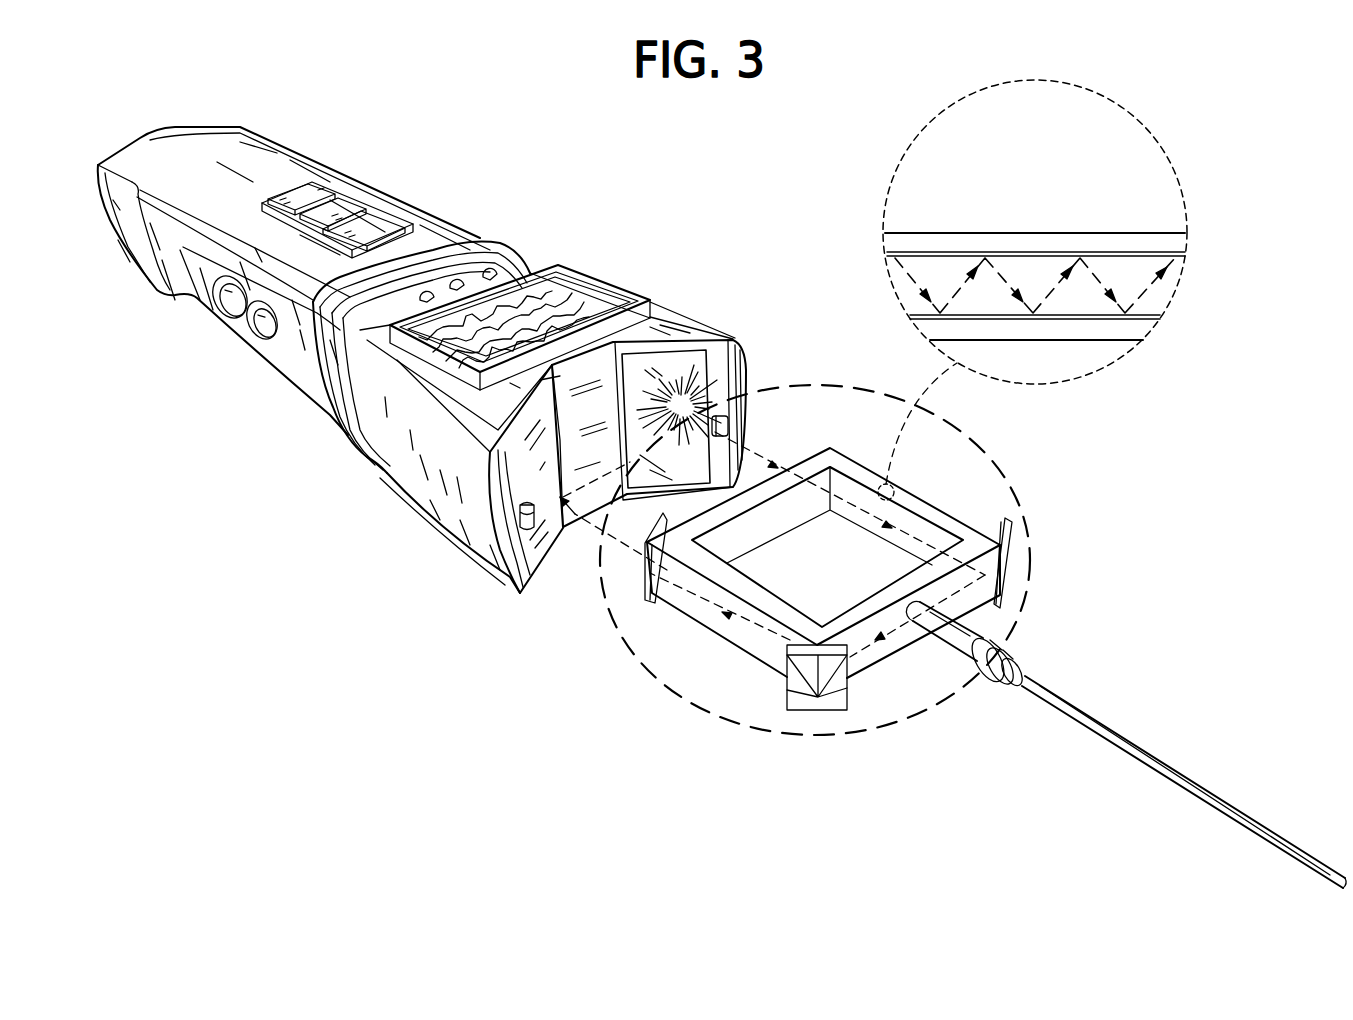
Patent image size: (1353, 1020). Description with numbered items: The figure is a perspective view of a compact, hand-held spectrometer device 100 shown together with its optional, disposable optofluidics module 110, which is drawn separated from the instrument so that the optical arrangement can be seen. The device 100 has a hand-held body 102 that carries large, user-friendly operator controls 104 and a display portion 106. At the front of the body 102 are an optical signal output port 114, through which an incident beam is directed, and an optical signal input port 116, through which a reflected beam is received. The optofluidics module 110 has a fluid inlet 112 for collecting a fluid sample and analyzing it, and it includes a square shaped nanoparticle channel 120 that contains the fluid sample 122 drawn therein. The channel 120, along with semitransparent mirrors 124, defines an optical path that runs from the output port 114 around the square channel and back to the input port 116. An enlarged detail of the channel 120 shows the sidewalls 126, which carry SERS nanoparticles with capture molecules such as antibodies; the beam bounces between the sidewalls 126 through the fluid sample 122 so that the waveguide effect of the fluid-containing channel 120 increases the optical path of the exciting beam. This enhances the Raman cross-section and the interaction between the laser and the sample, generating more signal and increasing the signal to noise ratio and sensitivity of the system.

The hand-held spectrometer device 100 is at (283, 110).
The hand-held body 102 is at (173, 172).
The operator controls 104 is at (378, 222).
The display portion 106 is at (602, 278).
The optofluidics module 110 is at (990, 498).
The fluid inlet 112 is at (1120, 722).
The optical signal output port 114 is at (683, 402).
The optical signal input port 116 is at (551, 556).
The nanoparticle channel 120 is at (705, 645).
The fluid sample 122 is at (1165, 290).
The semitransparent mirrors 124 is at (826, 725).
The sidewalls 126 is at (985, 252).